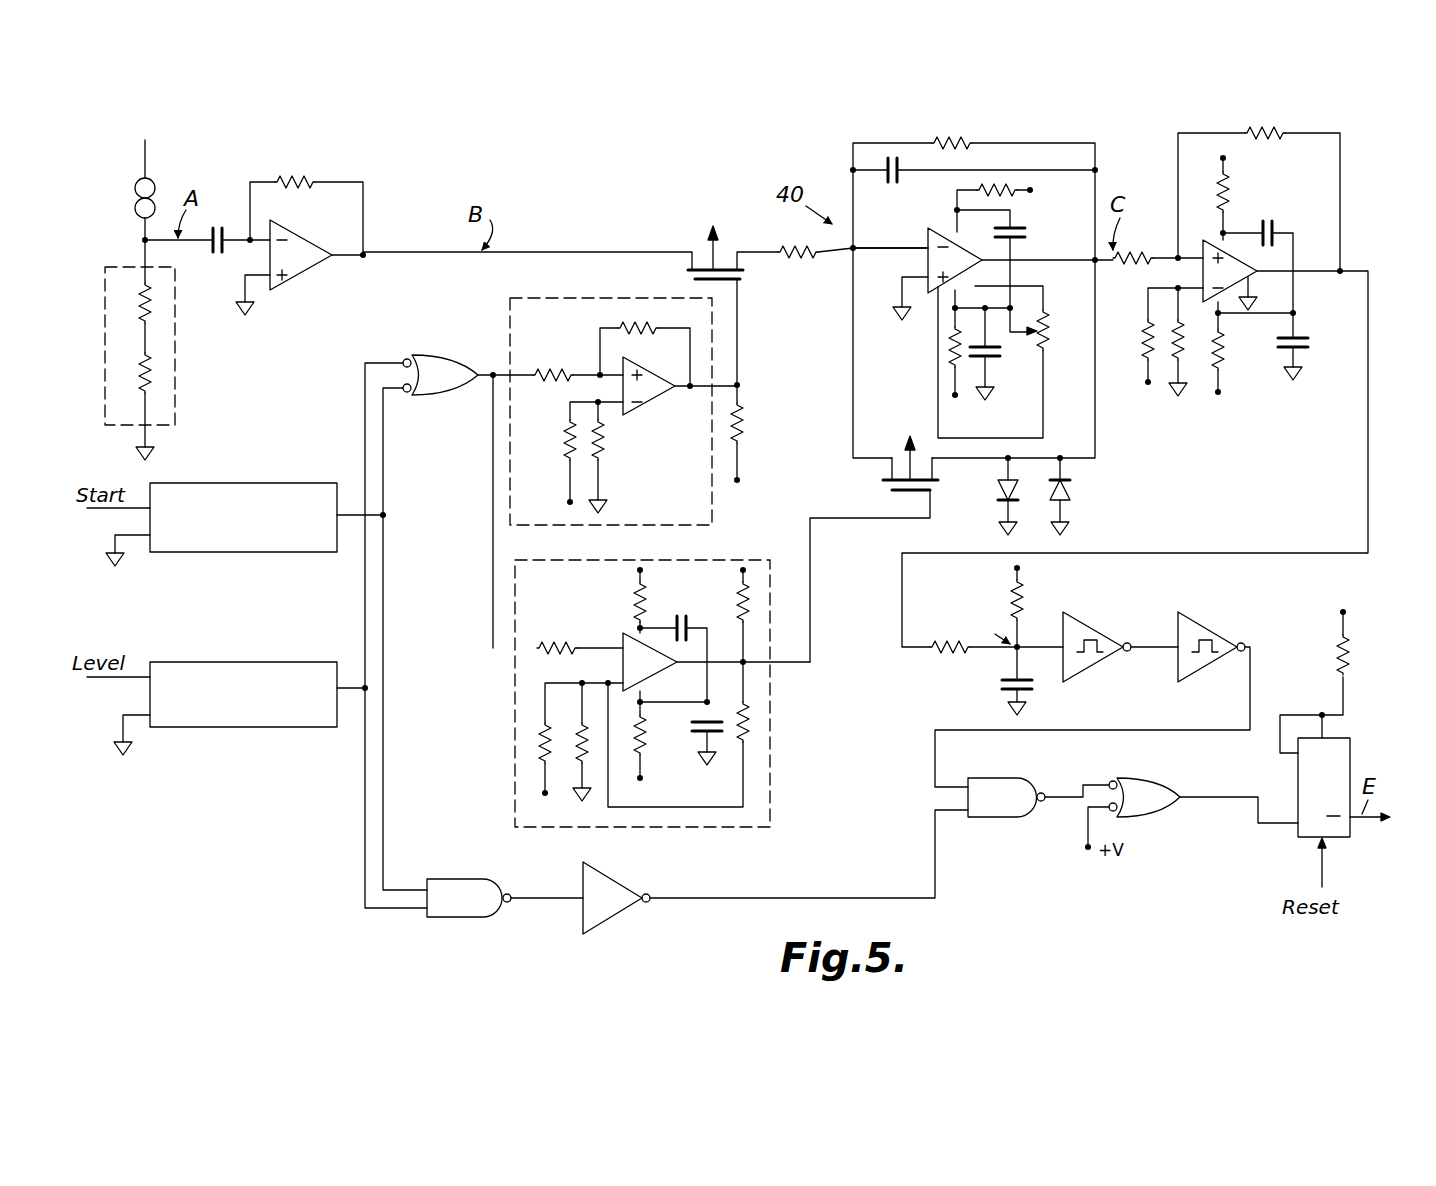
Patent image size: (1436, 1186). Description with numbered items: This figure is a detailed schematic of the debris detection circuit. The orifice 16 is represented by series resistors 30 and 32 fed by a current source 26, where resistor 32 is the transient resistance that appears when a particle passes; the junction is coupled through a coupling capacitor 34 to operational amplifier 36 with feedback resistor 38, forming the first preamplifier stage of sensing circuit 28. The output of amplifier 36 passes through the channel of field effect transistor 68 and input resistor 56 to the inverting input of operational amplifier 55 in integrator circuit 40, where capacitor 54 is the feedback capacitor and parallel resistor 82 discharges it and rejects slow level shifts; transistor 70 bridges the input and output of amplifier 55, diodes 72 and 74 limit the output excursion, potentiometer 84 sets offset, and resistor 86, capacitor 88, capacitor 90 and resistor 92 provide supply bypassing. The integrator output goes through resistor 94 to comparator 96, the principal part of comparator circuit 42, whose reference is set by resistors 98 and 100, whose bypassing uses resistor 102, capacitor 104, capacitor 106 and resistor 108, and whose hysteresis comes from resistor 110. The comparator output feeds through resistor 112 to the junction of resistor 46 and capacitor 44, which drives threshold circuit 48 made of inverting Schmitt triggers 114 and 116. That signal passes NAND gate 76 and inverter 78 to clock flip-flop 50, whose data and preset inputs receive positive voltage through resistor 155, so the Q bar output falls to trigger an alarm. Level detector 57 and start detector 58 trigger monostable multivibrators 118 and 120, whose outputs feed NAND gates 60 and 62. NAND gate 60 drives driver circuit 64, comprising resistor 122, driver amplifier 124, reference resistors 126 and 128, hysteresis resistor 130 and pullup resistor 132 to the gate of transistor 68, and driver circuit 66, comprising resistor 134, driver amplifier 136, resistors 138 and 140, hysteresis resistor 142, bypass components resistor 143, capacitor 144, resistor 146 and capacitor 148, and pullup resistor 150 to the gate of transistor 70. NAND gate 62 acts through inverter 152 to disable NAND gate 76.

The orifice 16 is at (147, 363).
The current source 26 is at (154, 182).
The sensing circuit 28 is at (310, 222).
The resistor 30 is at (136, 306).
The transient resistor 32 is at (160, 366).
The coupling capacitor 34 is at (236, 218).
The operational amplifier 36 is at (308, 262).
The feedback resistor 38 is at (312, 186).
The integrator circuit 40 is at (956, 391).
The comparator circuit 42 is at (1232, 274).
The capacitor 44 is at (1004, 684).
The resistor 46 is at (1022, 602).
The threshold circuit 48 is at (1082, 674).
The flip-flop circuit 50 is at (1298, 770).
The capacitor 54 is at (866, 168).
The operational amplifier 55 is at (936, 224).
The input resistor 56 is at (797, 274).
The level detector 57 is at (246, 665).
The start detector 58 is at (243, 489).
The NAND gate 60 is at (446, 356).
The NAND gate 62 is at (448, 879).
The driver circuit 64 is at (623, 393).
The driver circuit 66 is at (648, 681).
The field effect transistor 68 is at (688, 272).
The field effect transistor 70 is at (886, 474).
The diode 72 is at (1000, 496).
The diode 74 is at (1070, 488).
The NAND gate 76 is at (996, 778).
The inverter 78 is at (1154, 778).
The resistor 82 is at (972, 140).
The potentiometer 84 is at (1050, 320).
The resistor 86 is at (952, 352).
The capacitor 88 is at (1000, 358).
The capacitor 90 is at (1028, 230).
The resistor 92 is at (976, 190).
The resistor 94 is at (1136, 256).
The comparator 96 is at (1210, 250).
The resistor 98 is at (1140, 328).
The resistor 100 is at (1186, 384).
The resistor 102 is at (1224, 346).
The capacitor 104 is at (1298, 340).
The capacitor 106 is at (1282, 230).
The resistor 108 is at (1232, 190).
The resistor 110 is at (1288, 132).
The resistor 112 is at (954, 640).
The Schmitt trigger circuit 114 is at (1100, 626).
The Schmitt trigger circuit 116 is at (1210, 628).
The monostable multivibrator 118 is at (306, 662).
The monostable multivibrator 120 is at (294, 483).
The resistor 122 is at (553, 368).
The driver amplifier 124 is at (650, 405).
The resistor 126 is at (614, 463).
The resistor 128 is at (566, 462).
The resistor 130 is at (646, 326).
The resistor 132 is at (746, 432).
The resistor 134 is at (554, 644).
The driver amplifier 136 is at (626, 640).
The resistor 138 is at (582, 732).
The resistor 140 is at (540, 736).
The resistor 142 is at (756, 726).
The resistor 143 is at (646, 596).
The capacitor 144 is at (672, 622).
The resistor 146 is at (648, 756).
The capacitor 148 is at (716, 742).
The resistor 150 is at (750, 600).
The inverter 152 is at (620, 878).
The resistor 155 is at (1352, 656).